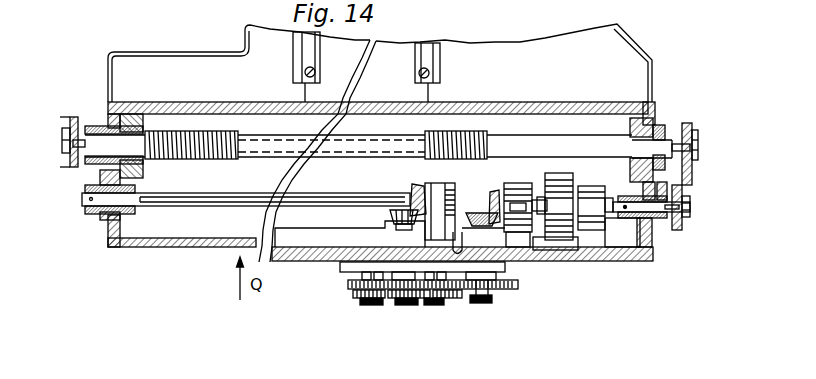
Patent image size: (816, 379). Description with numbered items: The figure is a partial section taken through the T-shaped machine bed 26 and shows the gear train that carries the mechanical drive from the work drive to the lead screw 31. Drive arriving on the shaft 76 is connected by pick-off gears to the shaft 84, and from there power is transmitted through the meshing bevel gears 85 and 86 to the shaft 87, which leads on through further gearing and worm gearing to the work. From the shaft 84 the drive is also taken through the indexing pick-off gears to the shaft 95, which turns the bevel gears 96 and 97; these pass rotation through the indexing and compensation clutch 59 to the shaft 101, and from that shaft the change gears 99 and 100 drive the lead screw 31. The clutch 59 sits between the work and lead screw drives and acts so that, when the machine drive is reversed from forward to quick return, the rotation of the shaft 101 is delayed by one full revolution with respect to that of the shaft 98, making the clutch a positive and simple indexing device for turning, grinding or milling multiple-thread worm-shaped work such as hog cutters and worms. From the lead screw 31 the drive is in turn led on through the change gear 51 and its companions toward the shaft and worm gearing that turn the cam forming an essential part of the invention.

The machine bed 26 is at (110, 232).
The lead screw 31 is at (543, 152).
The change gear 51 is at (75, 127).
The indexing and compensation clutch 59 is at (568, 197).
The shaft 76 is at (372, 300).
The shaft 84 is at (413, 300).
The bevel gear 85 is at (388, 218).
The bevel gear 86 is at (417, 195).
The shaft 87 is at (250, 206).
The shaft 95 is at (488, 302).
The bevel gear 96 is at (477, 218).
The bevel gear 97 is at (495, 192).
The shaft 98 is at (512, 197).
The change gear 99 is at (684, 188).
The change gear 100 is at (690, 135).
The shaft 101 is at (636, 203).